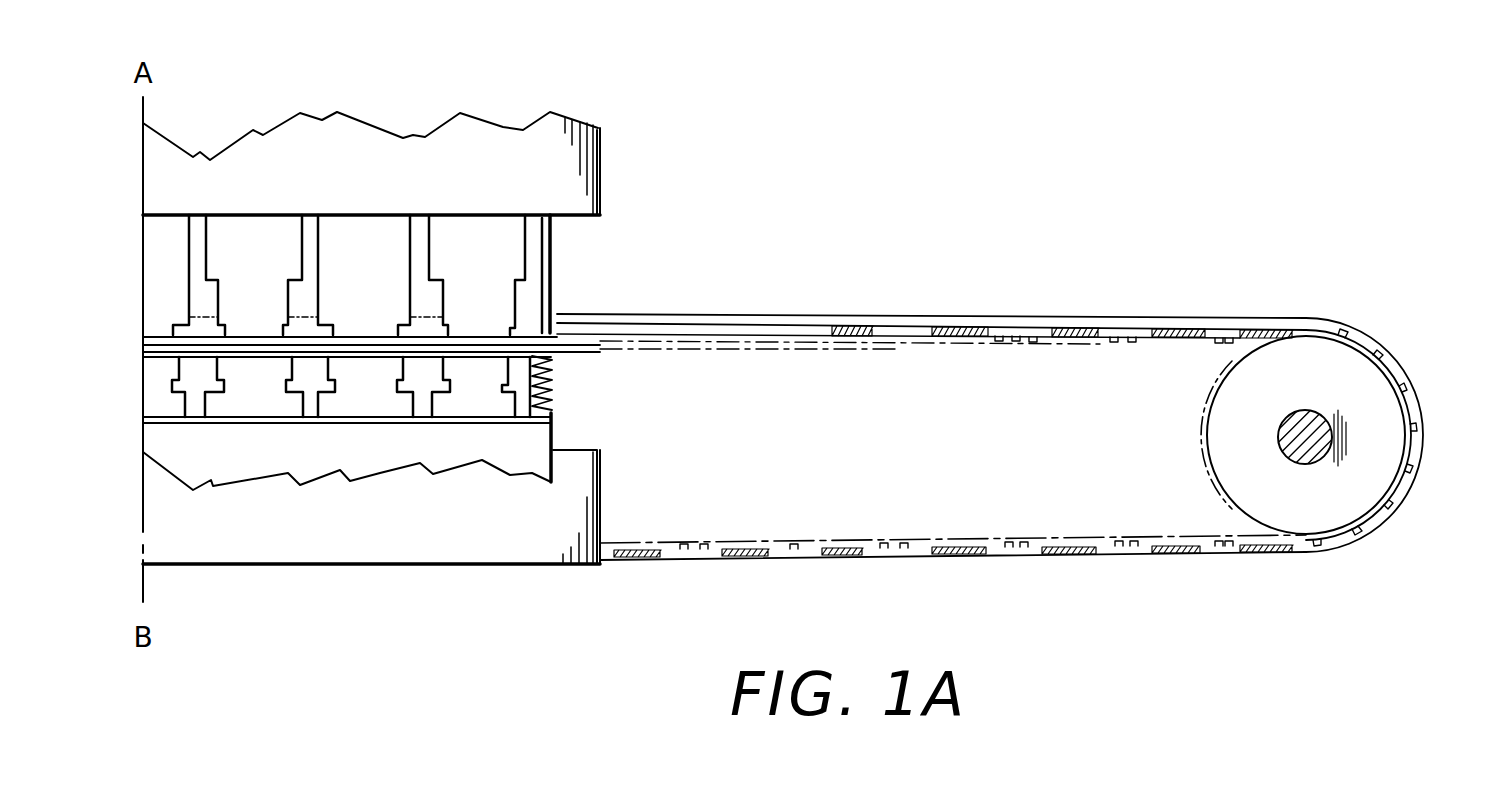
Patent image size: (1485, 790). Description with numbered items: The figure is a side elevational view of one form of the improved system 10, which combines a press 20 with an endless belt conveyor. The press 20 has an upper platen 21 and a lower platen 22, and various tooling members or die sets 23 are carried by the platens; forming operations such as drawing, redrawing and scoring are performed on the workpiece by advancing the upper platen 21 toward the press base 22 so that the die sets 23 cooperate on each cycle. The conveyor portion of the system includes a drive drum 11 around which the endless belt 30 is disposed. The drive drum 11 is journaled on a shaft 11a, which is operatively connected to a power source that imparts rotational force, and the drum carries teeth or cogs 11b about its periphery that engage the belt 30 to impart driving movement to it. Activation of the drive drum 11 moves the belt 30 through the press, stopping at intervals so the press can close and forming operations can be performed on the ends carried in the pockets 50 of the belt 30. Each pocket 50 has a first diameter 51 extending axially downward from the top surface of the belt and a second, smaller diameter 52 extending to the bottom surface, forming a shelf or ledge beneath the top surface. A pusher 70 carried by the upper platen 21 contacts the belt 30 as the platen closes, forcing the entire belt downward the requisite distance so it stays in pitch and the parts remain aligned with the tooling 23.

The improved system 10 is at (829, 214).
The press 20 is at (603, 174).
The upper platen 21 is at (573, 200).
The lower platen 22 is at (584, 517).
The tooling members or die sets 23 is at (533, 287).
The pusher 70 is at (510, 328).
The pockets 50 is at (930, 332).
The first diameter 51 is at (870, 333).
The second diameter 52 is at (900, 338).
The endless belt 30 is at (1012, 556).
The drive drum 11 is at (1287, 510).
The shaft 11a is at (1333, 437).
The teeth or cogs 11b is at (1240, 368).